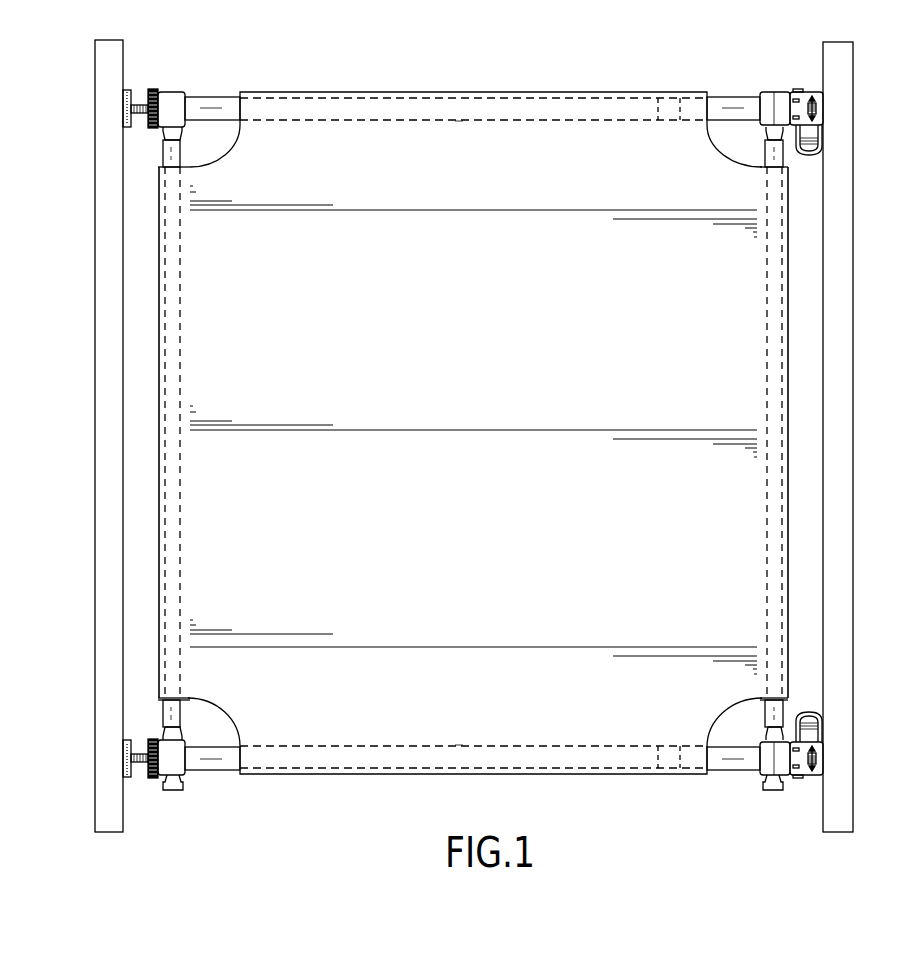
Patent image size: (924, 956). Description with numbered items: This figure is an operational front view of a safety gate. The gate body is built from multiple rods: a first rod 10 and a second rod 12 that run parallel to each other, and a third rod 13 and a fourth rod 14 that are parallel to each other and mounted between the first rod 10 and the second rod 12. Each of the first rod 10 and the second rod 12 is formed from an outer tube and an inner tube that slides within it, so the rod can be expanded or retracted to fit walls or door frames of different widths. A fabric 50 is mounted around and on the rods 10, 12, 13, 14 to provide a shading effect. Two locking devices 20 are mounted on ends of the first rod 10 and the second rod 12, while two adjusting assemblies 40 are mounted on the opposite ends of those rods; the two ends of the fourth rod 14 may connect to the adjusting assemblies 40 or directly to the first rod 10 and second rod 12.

The first rod 10 is at (573, 110).
The second rod 12 is at (596, 757).
The third rod 13 is at (773, 513).
The fourth rod 14 is at (172, 556).
The locking device 20 is at (821, 83).
The adjusting assembly 40 is at (172, 85).
The fabric 50 is at (210, 343).